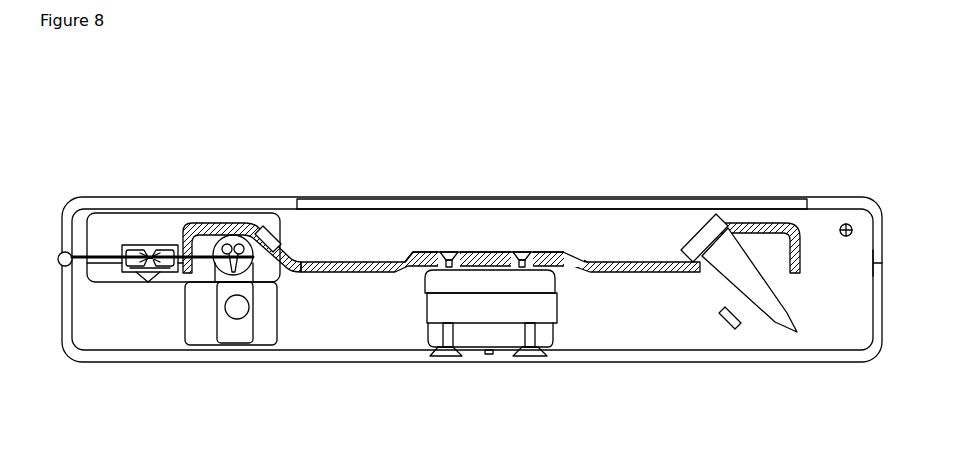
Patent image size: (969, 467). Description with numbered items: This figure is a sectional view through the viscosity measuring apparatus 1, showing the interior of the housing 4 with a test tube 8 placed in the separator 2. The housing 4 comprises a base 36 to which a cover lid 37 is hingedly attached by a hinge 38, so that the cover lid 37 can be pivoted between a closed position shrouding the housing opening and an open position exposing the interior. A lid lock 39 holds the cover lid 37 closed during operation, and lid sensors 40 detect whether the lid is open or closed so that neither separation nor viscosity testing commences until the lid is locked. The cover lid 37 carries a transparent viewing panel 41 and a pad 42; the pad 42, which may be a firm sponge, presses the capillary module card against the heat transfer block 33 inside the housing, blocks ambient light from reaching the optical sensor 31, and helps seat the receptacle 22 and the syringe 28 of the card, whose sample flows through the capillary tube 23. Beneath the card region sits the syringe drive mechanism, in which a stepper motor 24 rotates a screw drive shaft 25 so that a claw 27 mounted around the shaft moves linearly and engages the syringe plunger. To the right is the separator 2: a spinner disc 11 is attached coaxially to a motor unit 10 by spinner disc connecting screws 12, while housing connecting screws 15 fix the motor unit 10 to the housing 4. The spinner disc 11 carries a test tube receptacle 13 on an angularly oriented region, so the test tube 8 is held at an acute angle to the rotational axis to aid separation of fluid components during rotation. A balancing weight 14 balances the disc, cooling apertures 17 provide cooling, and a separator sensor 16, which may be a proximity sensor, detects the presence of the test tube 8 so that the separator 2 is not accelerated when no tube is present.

The viscosity measuring apparatus 1 is at (757, 84).
The separator 2 is at (220, 196).
The housing 4 is at (251, 170).
The test tube 8 is at (778, 314).
The motor unit 10 is at (528, 348).
The spinner disc 11 is at (500, 201).
The spinner disc connecting screws 12 is at (525, 255).
The test tube receptacle 13 is at (730, 242).
The balancing weight 14 is at (277, 235).
The housing connecting screws 15 is at (530, 357).
The separator sensor 16 is at (723, 320).
The cooling apertures 17 is at (583, 252).
The receptacle 22 is at (140, 272).
The capillary tube 23 is at (93, 267).
The stepper motor 24 is at (238, 366).
The screw drive shaft 25 is at (232, 310).
The claw 27 is at (240, 335).
The syringe 28 is at (253, 273).
The sensor 31 is at (131, 247).
The heat transfer block 33 is at (175, 277).
The base 36 is at (818, 356).
The cover lid 37 is at (824, 202).
The hinge 38 is at (61, 253).
The lid lock 39 is at (879, 266).
The lid sensors 40 is at (850, 227).
The transparent viewing panel 41 is at (650, 203).
The pad 42 is at (243, 222).